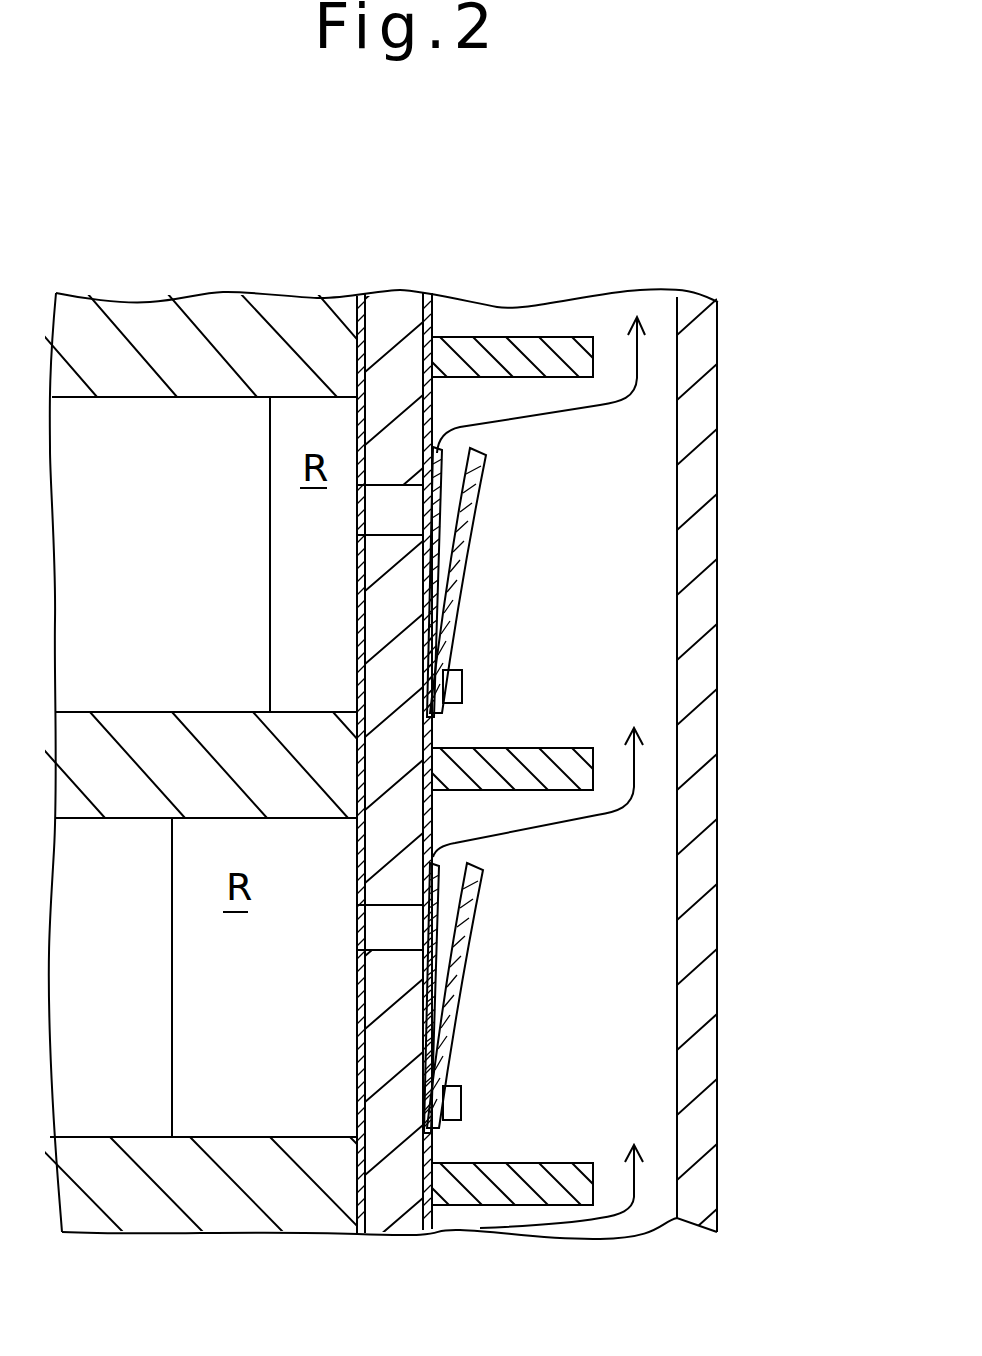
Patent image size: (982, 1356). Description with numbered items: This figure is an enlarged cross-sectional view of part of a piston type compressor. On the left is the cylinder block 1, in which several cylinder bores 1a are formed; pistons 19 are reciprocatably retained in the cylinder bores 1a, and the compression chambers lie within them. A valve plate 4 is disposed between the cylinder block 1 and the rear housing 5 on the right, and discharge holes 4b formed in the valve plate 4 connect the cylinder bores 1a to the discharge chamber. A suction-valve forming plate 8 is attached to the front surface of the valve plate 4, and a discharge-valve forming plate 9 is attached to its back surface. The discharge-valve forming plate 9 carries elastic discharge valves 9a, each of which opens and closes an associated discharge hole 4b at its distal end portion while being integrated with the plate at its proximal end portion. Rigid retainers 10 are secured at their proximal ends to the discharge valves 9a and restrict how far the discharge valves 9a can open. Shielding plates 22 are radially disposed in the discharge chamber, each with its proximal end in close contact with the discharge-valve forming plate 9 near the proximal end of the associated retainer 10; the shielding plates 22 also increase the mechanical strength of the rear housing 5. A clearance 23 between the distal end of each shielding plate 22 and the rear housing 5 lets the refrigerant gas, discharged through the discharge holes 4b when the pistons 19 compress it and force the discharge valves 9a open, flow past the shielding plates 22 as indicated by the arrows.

The cylinder block 1 is at (362, 771).
The cylinder bores 1a is at (318, 403).
The valve plate 4 is at (398, 1217).
The discharge holes 4b is at (383, 535).
The rear housing 5 is at (717, 660).
The suction-valve forming plate 8 is at (355, 1008).
The discharge-valve forming plate 9 is at (430, 1152).
The discharge valves 9a is at (478, 470).
The retainers 10 is at (462, 523).
The pistons 19 is at (270, 612).
The shielding plates 22 is at (532, 337).
The clearance 23 is at (655, 357).